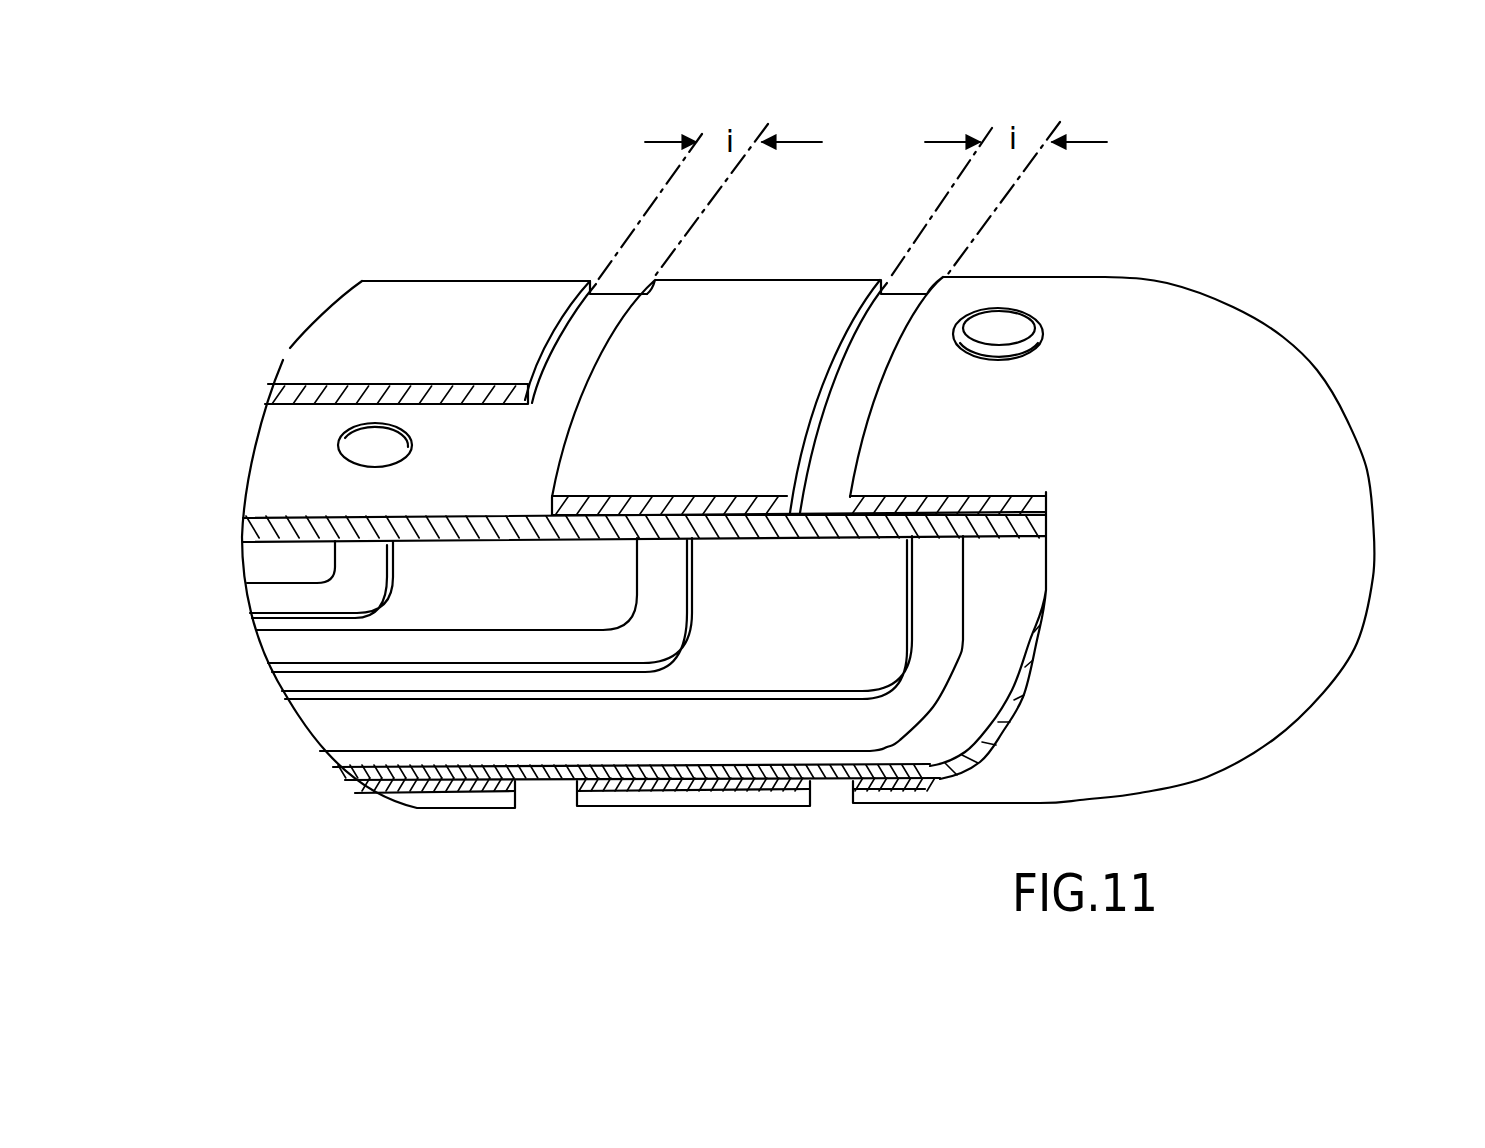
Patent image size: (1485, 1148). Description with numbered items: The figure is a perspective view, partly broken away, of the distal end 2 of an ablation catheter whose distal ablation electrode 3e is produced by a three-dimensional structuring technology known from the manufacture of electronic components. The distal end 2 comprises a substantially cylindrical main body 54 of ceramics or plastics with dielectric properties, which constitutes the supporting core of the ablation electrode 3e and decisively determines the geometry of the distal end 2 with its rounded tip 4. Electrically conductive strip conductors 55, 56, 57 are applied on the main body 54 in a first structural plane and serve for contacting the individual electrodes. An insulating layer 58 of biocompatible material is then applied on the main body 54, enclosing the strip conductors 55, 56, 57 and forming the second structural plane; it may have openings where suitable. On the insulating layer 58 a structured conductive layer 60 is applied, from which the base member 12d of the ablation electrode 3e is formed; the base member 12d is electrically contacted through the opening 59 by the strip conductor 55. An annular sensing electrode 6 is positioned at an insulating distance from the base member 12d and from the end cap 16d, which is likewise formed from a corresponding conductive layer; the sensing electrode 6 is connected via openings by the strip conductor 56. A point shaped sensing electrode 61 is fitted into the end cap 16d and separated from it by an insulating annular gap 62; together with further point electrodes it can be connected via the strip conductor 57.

The distal end 2 is at (1150, 266).
The tip 4 is at (1371, 507).
The sensing electrode 6 is at (764, 305).
The ablation electrode 3e is at (829, 256).
The base member 12d is at (468, 318).
The end cap 16d is at (1305, 441).
The main body 54 is at (750, 655).
The strip conductor 55 is at (293, 595).
The strip conductor 56 is at (320, 650).
The strip conductor 57 is at (392, 728).
The insulating layer 58 is at (293, 517).
The opening 59 is at (357, 450).
The structured conductive layer 60 is at (320, 385).
The point shaped sensing electrode 61 is at (1007, 328).
The insulating annular gap 62 is at (1040, 342).